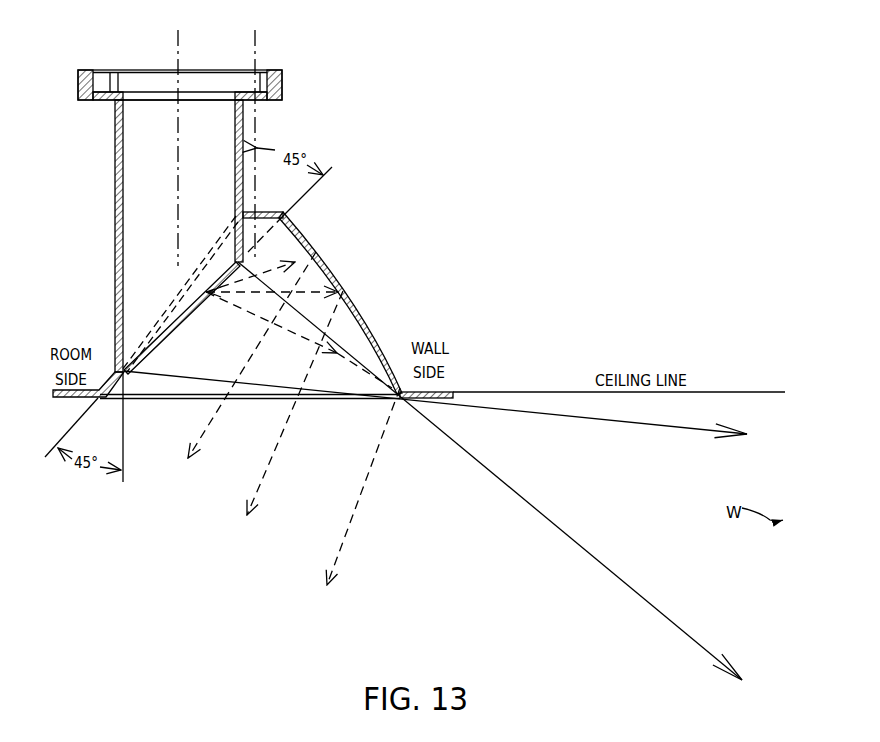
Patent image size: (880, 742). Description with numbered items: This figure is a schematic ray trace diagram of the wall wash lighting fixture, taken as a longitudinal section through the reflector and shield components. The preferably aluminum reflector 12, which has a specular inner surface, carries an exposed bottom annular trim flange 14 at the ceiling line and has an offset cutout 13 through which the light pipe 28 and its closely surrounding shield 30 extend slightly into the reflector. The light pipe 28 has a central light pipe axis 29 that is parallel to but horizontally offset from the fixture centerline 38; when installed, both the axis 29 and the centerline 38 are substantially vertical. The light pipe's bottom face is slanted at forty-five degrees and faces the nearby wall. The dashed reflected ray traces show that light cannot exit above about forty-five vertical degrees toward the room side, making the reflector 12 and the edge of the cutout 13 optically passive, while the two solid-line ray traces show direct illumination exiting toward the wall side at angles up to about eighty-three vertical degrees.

The reflector 12 is at (302, 258).
The offset cutout 13 is at (117, 371).
The bottom annular trim flange 14 is at (90, 396).
The light pipe 28 is at (135, 192).
The light pipe axis 29 is at (175, 35).
The shield 30 is at (116, 124).
The fixture centerline 38 is at (258, 37).